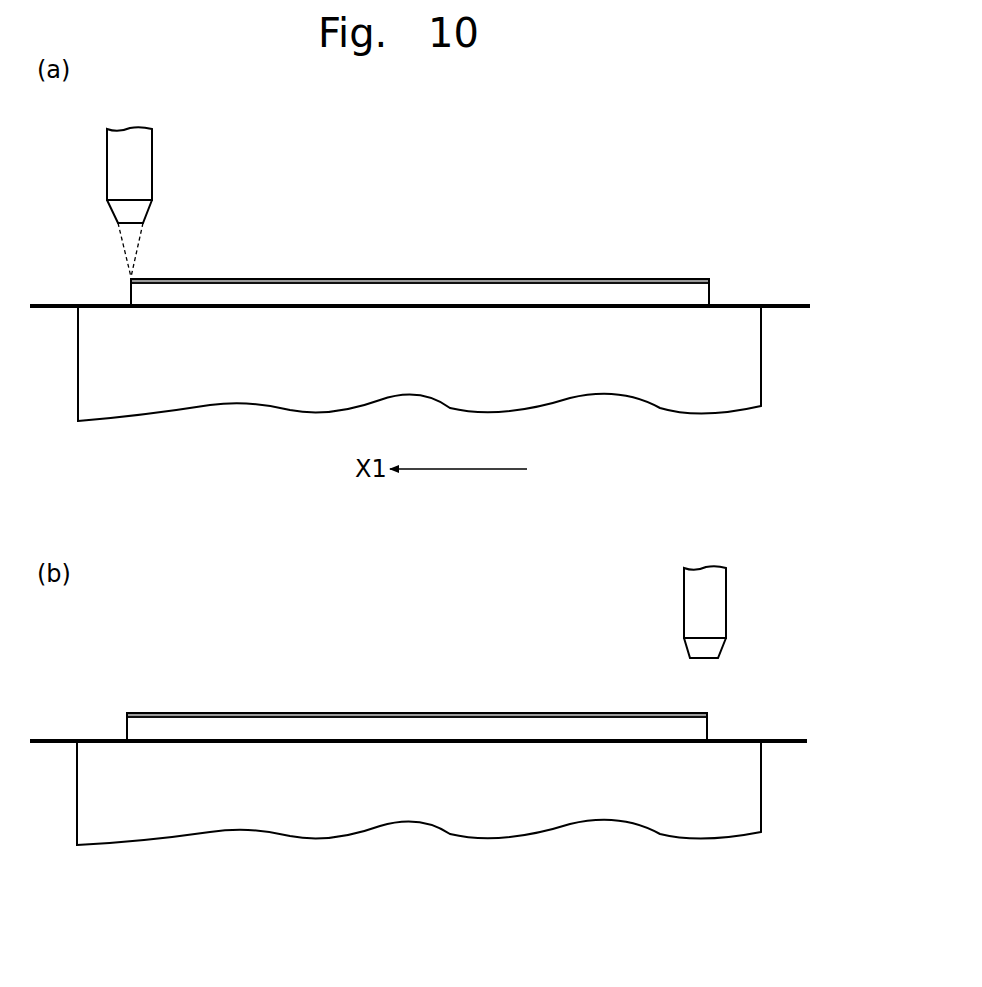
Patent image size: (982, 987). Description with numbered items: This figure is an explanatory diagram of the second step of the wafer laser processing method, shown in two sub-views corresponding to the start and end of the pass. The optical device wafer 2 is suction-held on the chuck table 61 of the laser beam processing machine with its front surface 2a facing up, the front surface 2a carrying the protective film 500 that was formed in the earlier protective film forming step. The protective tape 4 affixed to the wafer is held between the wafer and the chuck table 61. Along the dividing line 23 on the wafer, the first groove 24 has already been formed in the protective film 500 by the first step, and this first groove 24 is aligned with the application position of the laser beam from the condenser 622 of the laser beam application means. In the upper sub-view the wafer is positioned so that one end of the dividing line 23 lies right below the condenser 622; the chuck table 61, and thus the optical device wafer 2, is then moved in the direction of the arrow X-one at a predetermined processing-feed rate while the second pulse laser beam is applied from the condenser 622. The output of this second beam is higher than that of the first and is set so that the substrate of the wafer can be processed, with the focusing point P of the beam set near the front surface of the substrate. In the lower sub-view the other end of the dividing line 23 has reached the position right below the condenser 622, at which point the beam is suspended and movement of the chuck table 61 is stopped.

The condenser 622 is at (153, 155).
The protective film 500 is at (364, 279).
The front surface 2a is at (514, 279).
The optical device wafer 2 is at (643, 279).
The first groove 24 is at (715, 281).
The dividing line 23 is at (418, 500).
The protective tape 4 is at (57, 308).
The chuck table 61 is at (750, 372).
The focusing point P is at (131, 277).